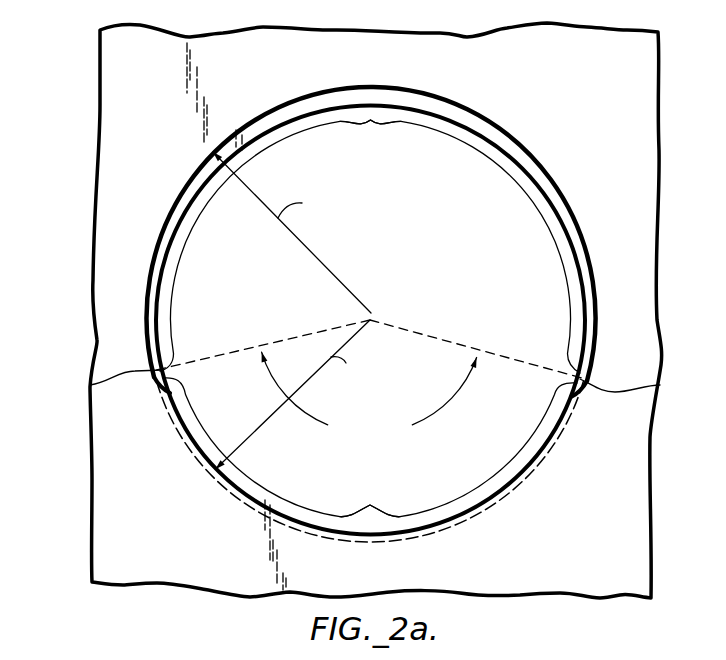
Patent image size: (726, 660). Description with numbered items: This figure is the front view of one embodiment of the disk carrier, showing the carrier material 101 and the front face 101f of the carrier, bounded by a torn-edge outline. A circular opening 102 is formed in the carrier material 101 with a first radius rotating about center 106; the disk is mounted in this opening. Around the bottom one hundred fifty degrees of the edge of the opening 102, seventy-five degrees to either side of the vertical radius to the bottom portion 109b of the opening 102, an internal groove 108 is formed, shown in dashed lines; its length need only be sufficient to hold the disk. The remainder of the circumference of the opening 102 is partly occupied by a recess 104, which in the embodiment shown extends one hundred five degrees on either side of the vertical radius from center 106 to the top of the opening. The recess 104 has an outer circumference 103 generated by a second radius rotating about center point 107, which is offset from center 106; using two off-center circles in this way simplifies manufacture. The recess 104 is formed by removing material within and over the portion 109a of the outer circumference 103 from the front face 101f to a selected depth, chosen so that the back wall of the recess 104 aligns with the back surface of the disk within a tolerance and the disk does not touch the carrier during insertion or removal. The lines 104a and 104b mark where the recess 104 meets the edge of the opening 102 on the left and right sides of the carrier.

The carrier material 101 is at (100, 51).
The face of substrate 101f is at (118, 86).
The opening 102 is at (477, 510).
The outer circumference 103 is at (480, 108).
The recess 104 is at (505, 137).
The left edge line of layer 104 104a is at (95, 383).
The right edge line of layer 104 104b is at (649, 389).
The center 106 is at (371, 320).
The center point 107 is at (371, 313).
The internal groove 108 is at (507, 492).
The portion of circumference 103 109a is at (371, 142).
The portion of opening 102 109b is at (371, 499).